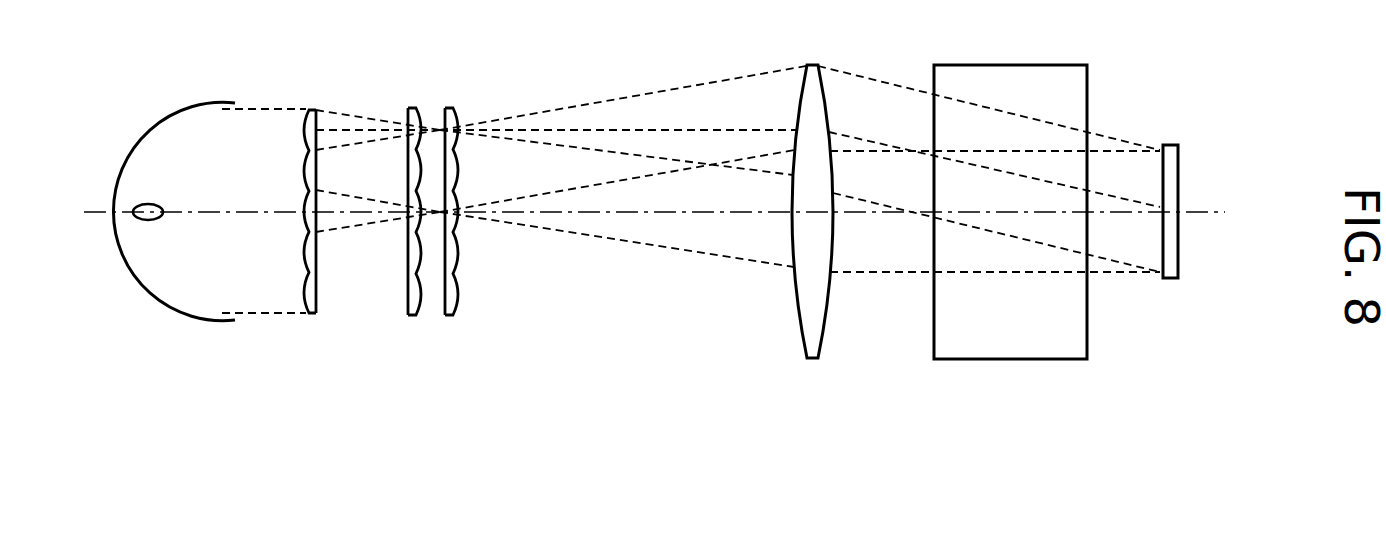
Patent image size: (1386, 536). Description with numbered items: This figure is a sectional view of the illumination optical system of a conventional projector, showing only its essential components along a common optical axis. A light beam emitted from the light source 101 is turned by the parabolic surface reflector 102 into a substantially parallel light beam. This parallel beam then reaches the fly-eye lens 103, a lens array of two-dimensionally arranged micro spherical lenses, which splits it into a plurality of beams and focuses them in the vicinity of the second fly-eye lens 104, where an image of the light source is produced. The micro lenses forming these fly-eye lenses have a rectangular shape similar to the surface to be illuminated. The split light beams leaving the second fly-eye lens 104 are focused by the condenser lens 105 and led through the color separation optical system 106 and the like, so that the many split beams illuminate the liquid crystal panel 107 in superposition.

The light source 101 is at (148, 221).
The parabolic surface reflector 102 is at (199, 314).
The fly-eye lens 103 is at (316, 314).
The second fly-eye lens 104 is at (453, 316).
The condenser lens 105 is at (813, 359).
The color separation optical system 106 is at (1000, 360).
The liquid crystal panel 107 is at (1177, 280).